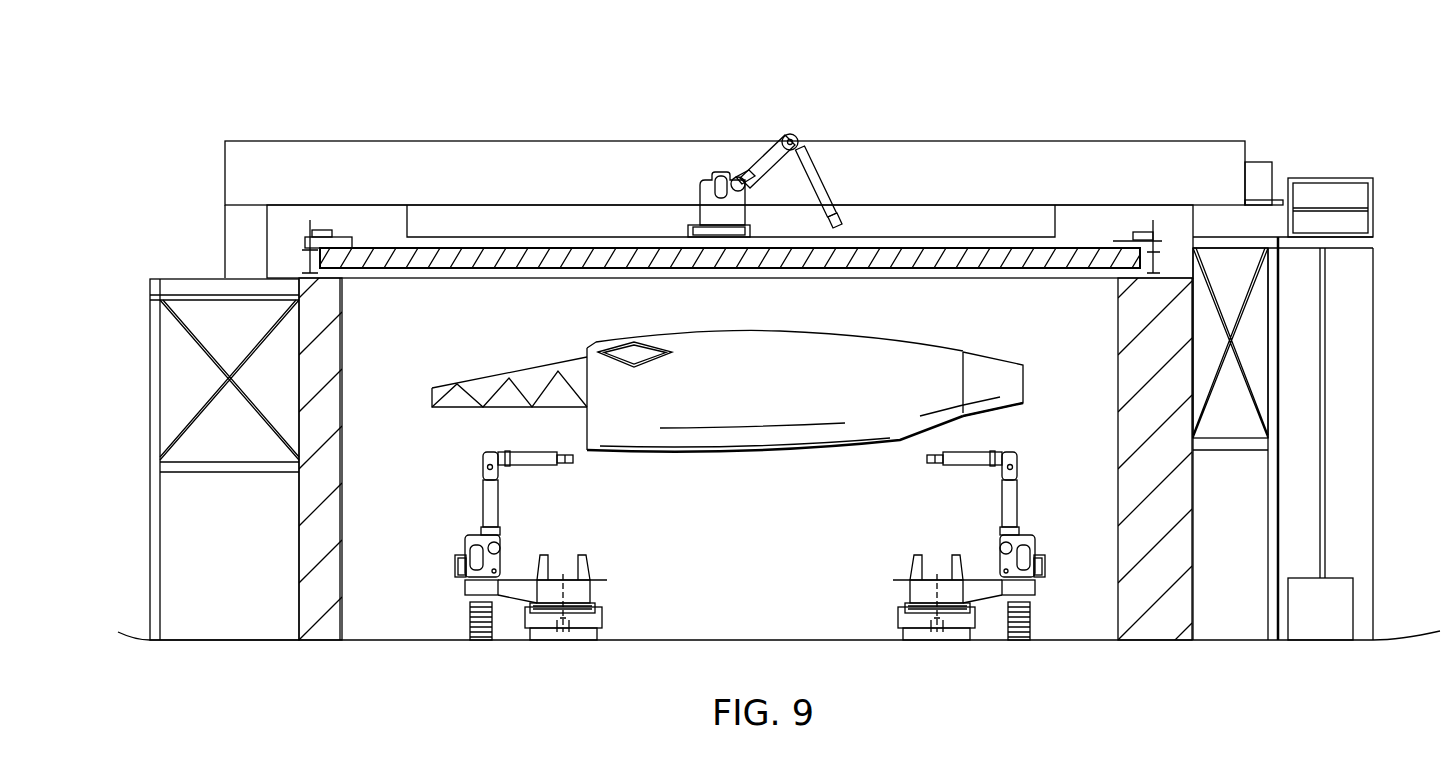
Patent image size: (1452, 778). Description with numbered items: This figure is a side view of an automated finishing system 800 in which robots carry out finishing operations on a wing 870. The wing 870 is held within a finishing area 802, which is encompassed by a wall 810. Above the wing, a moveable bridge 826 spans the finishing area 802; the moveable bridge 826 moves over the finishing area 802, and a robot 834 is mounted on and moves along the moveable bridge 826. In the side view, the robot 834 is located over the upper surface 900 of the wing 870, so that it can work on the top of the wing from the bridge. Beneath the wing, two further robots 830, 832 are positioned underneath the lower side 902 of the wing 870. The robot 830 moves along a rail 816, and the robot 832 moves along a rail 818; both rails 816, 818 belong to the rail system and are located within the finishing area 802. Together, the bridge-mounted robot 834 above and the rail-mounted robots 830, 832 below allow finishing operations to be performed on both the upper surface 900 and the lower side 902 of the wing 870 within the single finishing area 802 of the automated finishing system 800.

The automated finishing system 800 is at (761, 365).
The moveable bridge 826 is at (465, 155).
The robot 834 is at (800, 132).
The wall 810 is at (343, 345).
The finishing area 802 is at (1075, 624).
The upper surface 900 is at (743, 398).
The wing 870 is at (996, 349).
The lower side 902 is at (806, 452).
The robot 830 is at (455, 565).
The robot 832 is at (1020, 505).
The rail 816 is at (603, 620).
The rail 818 is at (875, 620).